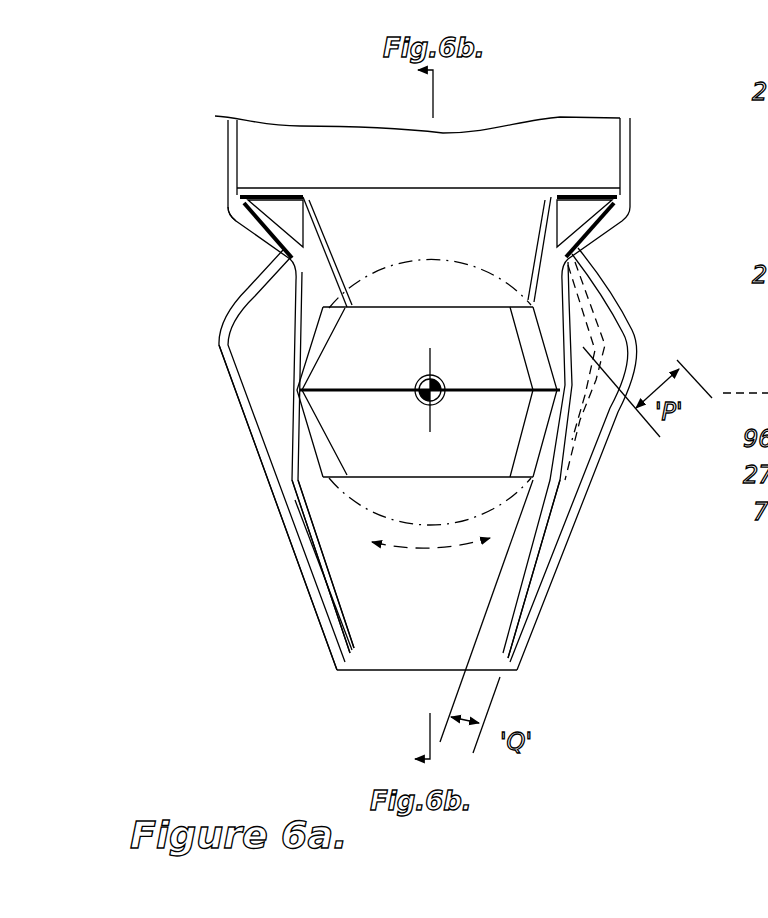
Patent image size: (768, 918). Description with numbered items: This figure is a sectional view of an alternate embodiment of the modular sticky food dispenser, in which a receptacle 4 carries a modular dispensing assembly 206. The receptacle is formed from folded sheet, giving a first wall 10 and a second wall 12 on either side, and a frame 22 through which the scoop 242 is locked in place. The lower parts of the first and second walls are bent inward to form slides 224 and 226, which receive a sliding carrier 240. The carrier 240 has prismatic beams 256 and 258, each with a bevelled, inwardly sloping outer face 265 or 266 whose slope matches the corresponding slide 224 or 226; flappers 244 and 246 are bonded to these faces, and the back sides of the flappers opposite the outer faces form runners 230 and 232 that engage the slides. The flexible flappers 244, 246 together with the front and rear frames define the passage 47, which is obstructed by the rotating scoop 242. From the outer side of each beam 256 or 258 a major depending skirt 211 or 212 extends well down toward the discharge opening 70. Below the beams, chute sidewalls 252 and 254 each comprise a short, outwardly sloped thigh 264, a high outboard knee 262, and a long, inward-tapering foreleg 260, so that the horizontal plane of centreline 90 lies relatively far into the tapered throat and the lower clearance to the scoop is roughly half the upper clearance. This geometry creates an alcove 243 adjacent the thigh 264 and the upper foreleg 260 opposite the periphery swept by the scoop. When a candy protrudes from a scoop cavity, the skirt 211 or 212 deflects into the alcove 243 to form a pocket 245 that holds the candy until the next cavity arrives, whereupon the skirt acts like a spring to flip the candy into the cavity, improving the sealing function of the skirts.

The receptacle 4 is at (633, 137).
The first wall 10 is at (615, 137).
The second wall 12 is at (222, 139).
The frame 22 is at (552, 148).
The passage 47 is at (377, 170).
The discharge opening 70 is at (393, 694).
The centreline 90 is at (410, 402).
The modular dispensing assembly 206 is at (540, 634).
The skirt 211 is at (318, 589).
The skirt 212 is at (570, 478).
The slide 224 is at (622, 231).
The slide 226 is at (228, 222).
The runner 230 is at (608, 240).
The runner 232 is at (258, 228).
The carrier 240 is at (228, 382).
The scoop 242 is at (313, 405).
The alcove 243 is at (606, 315).
The flapper 244 is at (552, 518).
The pocket 245 is at (585, 339).
The flapper 246 is at (302, 534).
The chute sidewall 252 is at (552, 597).
The chute sidewall 254 is at (278, 514).
The prismatic beam 256 is at (585, 198).
The prismatic beam 258 is at (272, 193).
The foreleg 260 is at (262, 482).
The knee 262 is at (213, 323).
The thigh 264 is at (221, 290).
The outer face 265 is at (620, 213).
The outer face 266 is at (262, 243).